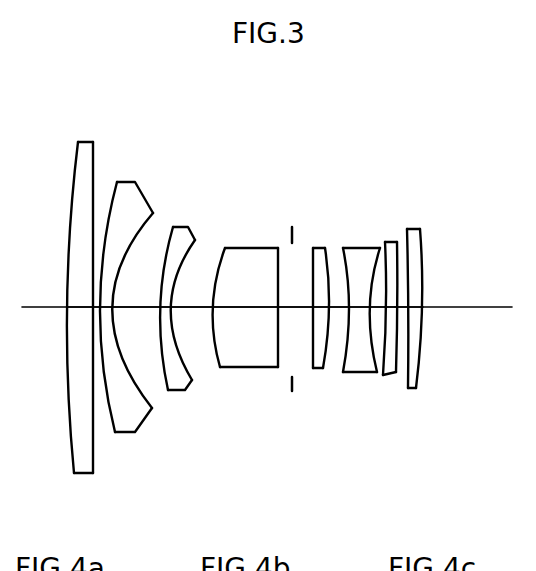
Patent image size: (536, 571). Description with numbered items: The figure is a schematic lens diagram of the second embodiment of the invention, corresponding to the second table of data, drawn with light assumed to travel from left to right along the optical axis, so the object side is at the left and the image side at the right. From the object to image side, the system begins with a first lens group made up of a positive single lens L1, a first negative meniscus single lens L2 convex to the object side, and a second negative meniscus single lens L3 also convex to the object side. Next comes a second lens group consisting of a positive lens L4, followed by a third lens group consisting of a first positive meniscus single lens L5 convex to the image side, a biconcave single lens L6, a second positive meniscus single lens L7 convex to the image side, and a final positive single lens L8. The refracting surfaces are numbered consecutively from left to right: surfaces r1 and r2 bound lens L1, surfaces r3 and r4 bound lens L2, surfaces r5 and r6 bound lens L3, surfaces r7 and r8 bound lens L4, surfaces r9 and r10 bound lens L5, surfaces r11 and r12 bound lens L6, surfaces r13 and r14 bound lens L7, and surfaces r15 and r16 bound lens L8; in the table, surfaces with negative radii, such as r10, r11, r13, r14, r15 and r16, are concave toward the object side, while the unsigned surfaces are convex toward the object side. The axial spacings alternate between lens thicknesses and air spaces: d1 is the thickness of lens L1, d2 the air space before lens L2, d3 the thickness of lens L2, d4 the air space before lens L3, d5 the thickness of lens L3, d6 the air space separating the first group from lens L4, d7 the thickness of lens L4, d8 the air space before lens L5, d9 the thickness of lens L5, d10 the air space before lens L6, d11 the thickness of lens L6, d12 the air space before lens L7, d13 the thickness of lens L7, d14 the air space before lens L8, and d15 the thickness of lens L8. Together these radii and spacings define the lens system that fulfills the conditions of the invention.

The positive single lens L1 is at (87, 142).
The first negative meniscus single lens L2 is at (137, 182).
The second negative meniscus single lens L3 is at (187, 227).
The positive lens L4 is at (247, 248).
The first positive meniscus single lens L5 is at (318, 248).
The biconcave single lens L6 is at (360, 248).
The second positive meniscus single lens L7 is at (392, 242).
The positive single lens L8 is at (415, 229).
The axial thickness of lens L1 d1 is at (79, 306).
The axial air space between L1 and L2 d2 is at (93, 310).
The axial thickness of lens L2 d3 is at (104, 292).
The axial air space between L2 and L3 d4 is at (134, 307).
The axial thickness of lens L3 d5 is at (165, 311).
The axial air space between L3 and L4 d6 is at (193, 307).
The axial thickness of lens L4 d7 is at (247, 307).
The axial air space between L4 and L5 d8 is at (304, 300).
The axial thickness of lens L5 d9 is at (318, 316).
The axial air space between L5 and L6 d10 is at (338, 302).
The axial thickness of lens L6 d11 is at (361, 305).
The axial air space between L6 and L7 d12 is at (384, 281).
The axial thickness of lens L7 d13 is at (392, 294).
The axial air space between L7 and L8 d14 is at (412, 307).
The axial thickness of lens L8 d15 is at (423, 313).
The object-side surface of lens L1 r1 is at (70, 448).
The image-side surface of lens L1 r2 is at (92, 470).
The object-side surface of lens L2 r3 is at (115, 432).
The image-side surface of lens L2 r4 is at (147, 420).
The object-side surface of lens L3 r5 is at (168, 390).
The image-side surface of lens L3 r6 is at (186, 376).
The object-side surface of lens L4 r7 is at (219, 368).
The image-side surface of lens L4 r8 is at (277, 362).
The object-side surface of lens L5 r9 is at (311, 371).
The image-side surface of lens L5 r10 is at (324, 369).
The object-side surface of lens L6 r11 is at (344, 373).
The image-side surface of lens L6 r12 is at (376, 373).
The object-side surface of lens L7 r13 is at (383, 376).
The image-side surface of lens L7 r14 is at (396, 374).
The object-side surface of lens L8 r15 is at (410, 389).
The image-side surface of lens L8 r16 is at (420, 388).